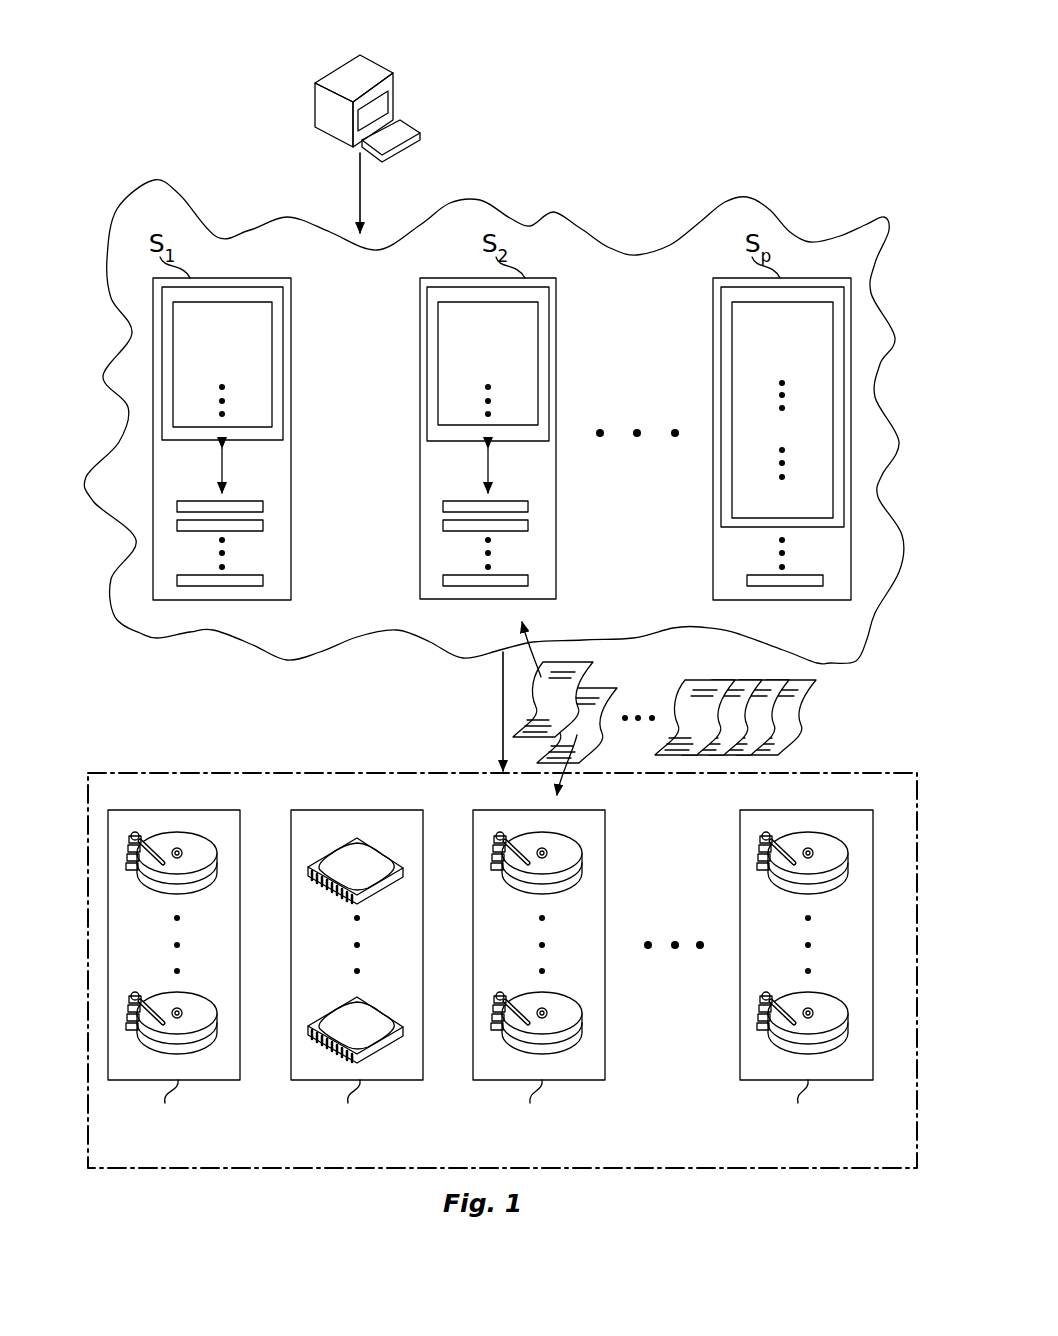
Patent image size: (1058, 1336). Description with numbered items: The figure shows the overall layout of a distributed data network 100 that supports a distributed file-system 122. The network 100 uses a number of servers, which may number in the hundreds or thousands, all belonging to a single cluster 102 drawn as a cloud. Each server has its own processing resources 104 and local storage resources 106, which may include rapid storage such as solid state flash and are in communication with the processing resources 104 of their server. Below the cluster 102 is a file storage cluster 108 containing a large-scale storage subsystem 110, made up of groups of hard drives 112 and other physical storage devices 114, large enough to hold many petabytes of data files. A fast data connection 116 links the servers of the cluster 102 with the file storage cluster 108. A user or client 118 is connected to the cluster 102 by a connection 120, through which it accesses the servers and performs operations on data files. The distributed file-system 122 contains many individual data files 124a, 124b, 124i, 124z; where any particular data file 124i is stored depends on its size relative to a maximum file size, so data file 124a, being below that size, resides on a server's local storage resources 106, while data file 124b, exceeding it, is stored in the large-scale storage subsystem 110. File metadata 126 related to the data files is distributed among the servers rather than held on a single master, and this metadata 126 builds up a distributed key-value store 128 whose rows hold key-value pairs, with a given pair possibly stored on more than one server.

The distributed data network 100 is at (762, 108).
The cluster 102 is at (553, 212).
The processing resources 104 is at (287, 360).
The local storage resources 106 is at (272, 514).
The file storage cluster 108 is at (180, 773).
The large-scale storage subsystem 110 is at (618, 1104).
The hard drives 112 is at (162, 903).
The physical storage devices 114 is at (350, 900).
The fast data connection 116 is at (503, 740).
The client 118 is at (313, 100).
The connection 120 is at (358, 190).
The distributed file-system 122 is at (720, 706).
The data file 124a is at (600, 647).
The data file 124b is at (593, 755).
The data file 124i is at (677, 697).
The data file 124z is at (790, 738).
The file metadata 126 is at (455, 388).
The distributed key-value store 128 is at (443, 318).